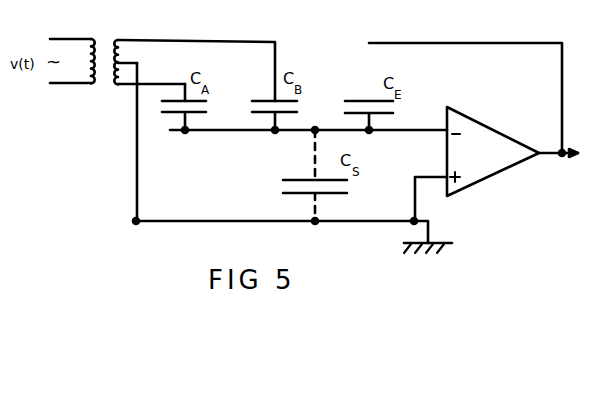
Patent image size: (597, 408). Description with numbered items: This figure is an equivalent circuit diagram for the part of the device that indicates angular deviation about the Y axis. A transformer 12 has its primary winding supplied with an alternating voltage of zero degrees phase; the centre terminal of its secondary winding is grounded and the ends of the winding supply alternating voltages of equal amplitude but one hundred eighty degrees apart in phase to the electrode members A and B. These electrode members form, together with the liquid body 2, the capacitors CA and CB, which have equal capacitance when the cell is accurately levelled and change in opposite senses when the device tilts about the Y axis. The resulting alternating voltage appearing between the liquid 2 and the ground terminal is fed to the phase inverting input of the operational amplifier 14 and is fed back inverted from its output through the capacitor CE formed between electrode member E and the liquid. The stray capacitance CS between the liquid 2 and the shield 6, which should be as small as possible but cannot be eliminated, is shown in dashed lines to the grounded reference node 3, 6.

The transformer 12 is at (103, 40).
The liquid body 2 is at (182, 130).
The operational amplifier 14 is at (468, 124).
The ground reference node 3 is at (290, 236).
The shield 6 is at (290, 236).